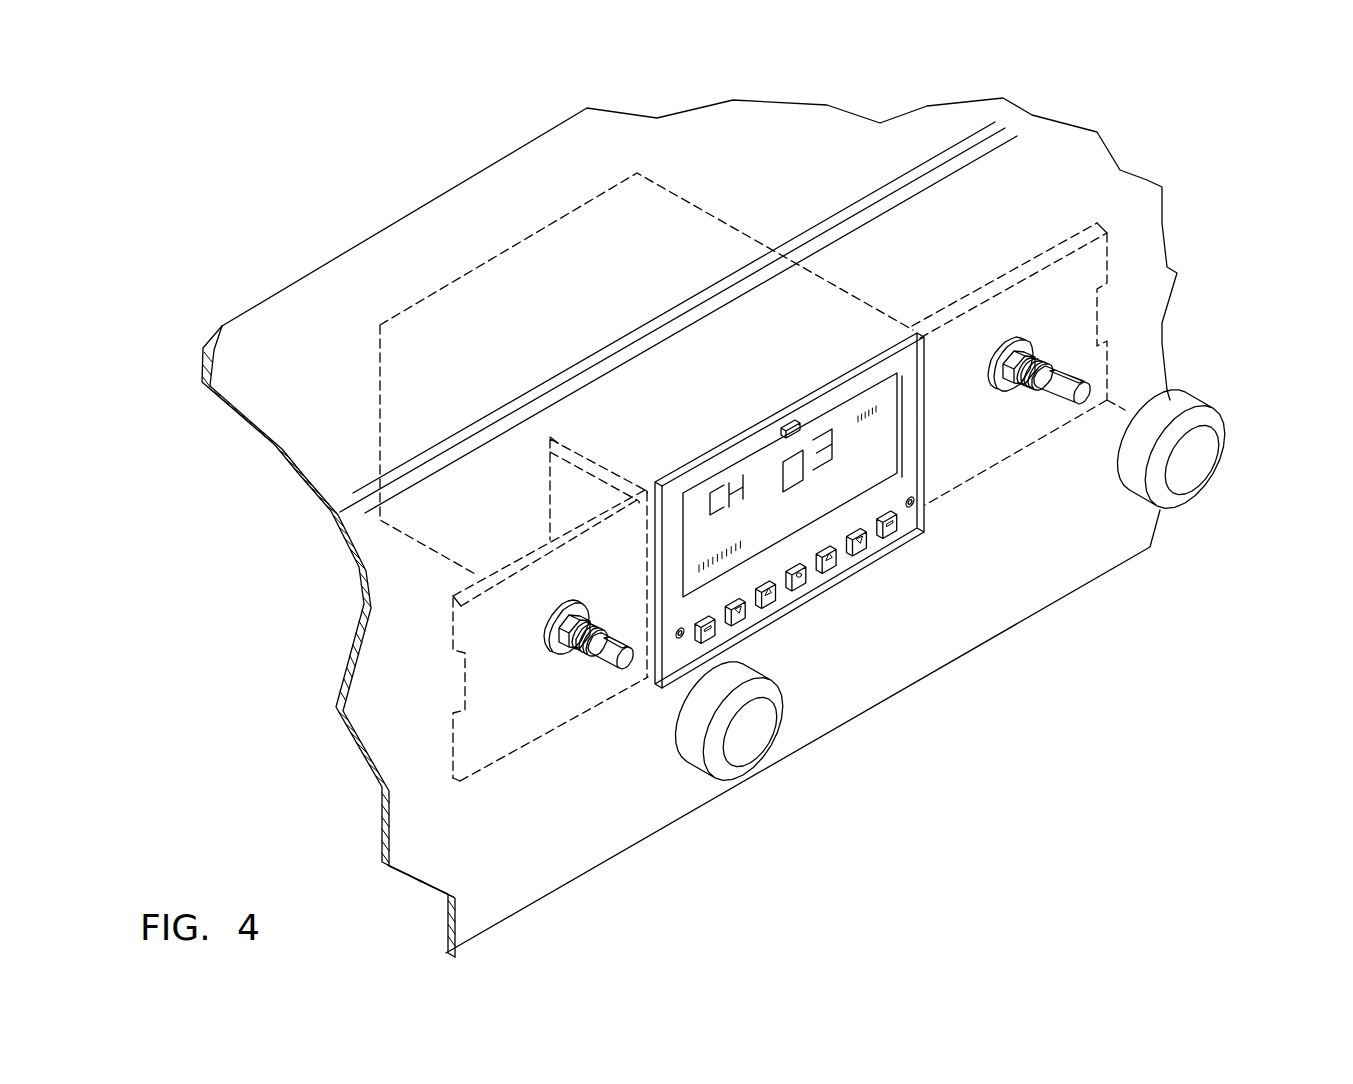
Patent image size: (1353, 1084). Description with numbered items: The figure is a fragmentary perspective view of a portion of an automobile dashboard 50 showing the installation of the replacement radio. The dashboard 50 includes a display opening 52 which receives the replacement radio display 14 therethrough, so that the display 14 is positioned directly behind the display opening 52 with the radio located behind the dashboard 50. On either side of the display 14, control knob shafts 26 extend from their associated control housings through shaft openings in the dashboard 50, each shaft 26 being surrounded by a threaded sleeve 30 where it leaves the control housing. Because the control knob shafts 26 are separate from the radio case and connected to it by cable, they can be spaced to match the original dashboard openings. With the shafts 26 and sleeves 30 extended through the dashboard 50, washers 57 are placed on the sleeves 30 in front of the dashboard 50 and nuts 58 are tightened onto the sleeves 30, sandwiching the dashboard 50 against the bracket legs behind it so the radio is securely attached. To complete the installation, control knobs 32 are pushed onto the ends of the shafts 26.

The radio display 14 is at (853, 385).
The control knob shaft 26 is at (600, 660).
The threaded sleeve 30 is at (575, 655).
The control knob 32 is at (753, 745).
The dashboard 50 is at (970, 635).
The display opening 52 is at (758, 418).
The washer 57 is at (576, 603).
The nut 58 is at (556, 630).